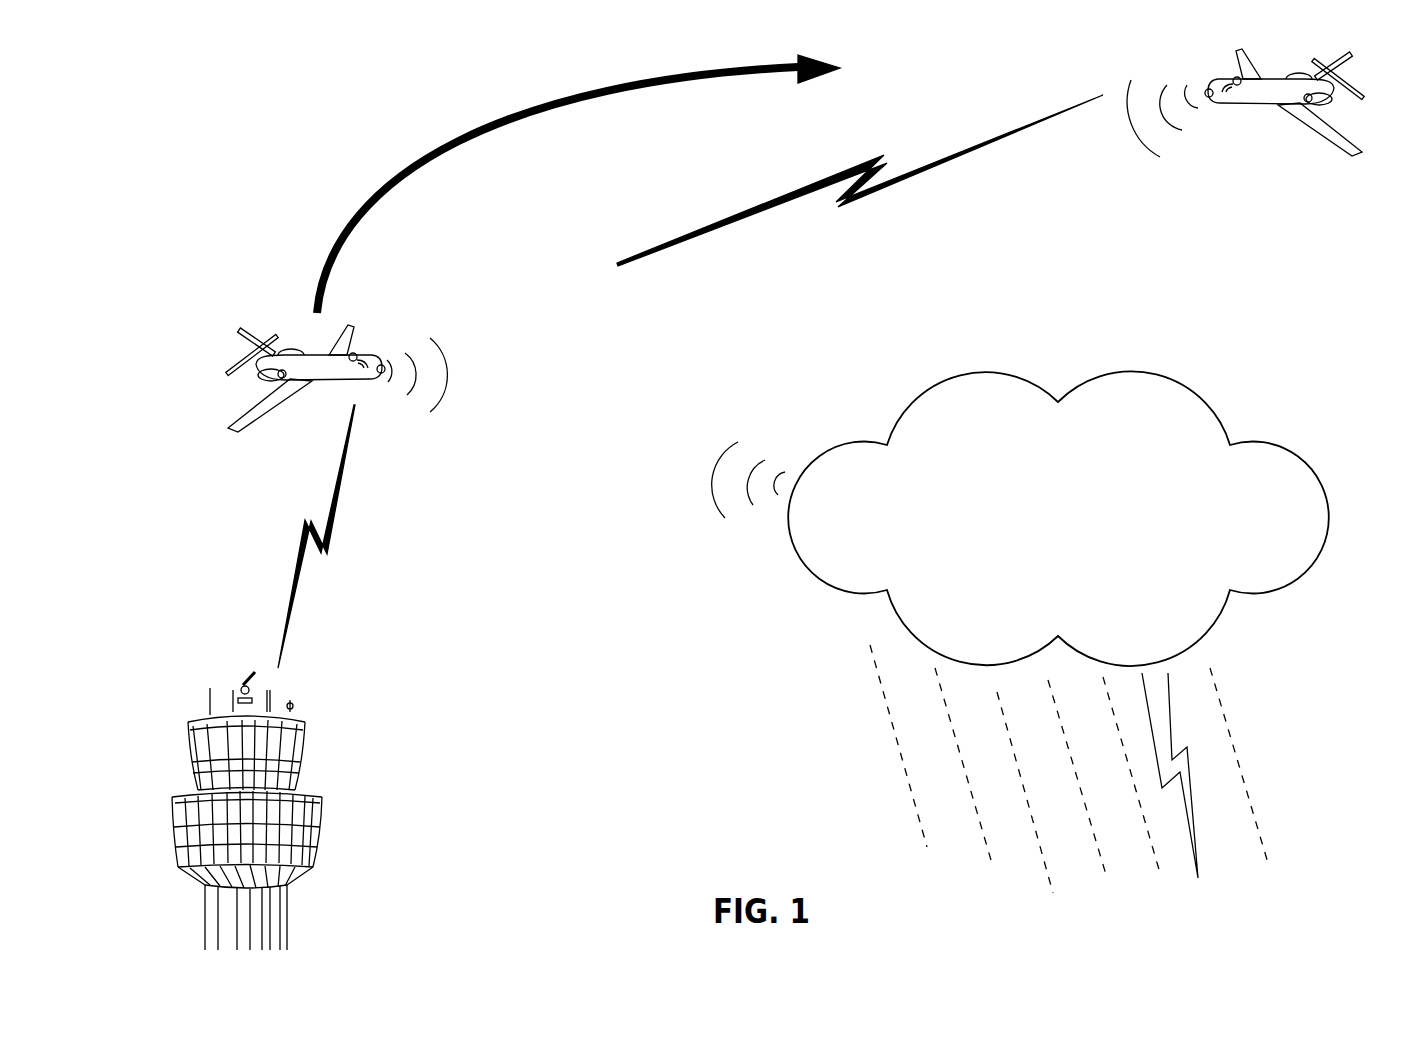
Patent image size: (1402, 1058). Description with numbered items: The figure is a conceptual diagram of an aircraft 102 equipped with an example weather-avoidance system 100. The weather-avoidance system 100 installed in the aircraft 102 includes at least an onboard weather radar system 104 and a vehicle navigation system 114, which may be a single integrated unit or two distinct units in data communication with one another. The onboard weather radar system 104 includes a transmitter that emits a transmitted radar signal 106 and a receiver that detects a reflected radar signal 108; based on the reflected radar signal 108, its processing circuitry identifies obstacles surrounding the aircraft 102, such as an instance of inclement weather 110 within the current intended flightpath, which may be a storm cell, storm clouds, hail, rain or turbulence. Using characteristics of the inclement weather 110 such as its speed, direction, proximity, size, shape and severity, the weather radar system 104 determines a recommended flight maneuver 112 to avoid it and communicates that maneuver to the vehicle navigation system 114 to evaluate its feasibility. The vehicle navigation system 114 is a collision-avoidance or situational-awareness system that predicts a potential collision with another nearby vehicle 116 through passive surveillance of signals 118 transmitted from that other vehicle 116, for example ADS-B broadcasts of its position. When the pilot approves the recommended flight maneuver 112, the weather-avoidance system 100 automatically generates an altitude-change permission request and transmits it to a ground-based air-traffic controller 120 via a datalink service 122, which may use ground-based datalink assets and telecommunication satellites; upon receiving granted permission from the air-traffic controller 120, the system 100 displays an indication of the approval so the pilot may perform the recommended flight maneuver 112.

The weather-avoidance system 100 is at (347, 308).
The aircraft 102 is at (242, 322).
The onboard weather radar system 104 is at (383, 374).
The transmitted radar signal 106 is at (447, 372).
The reflected radar signal 108 is at (752, 518).
The inclement weather 110 is at (1078, 529).
The recommended flight maneuver 112 is at (430, 155).
The vehicle navigation system 114 is at (354, 353).
The other vehicle 116 is at (1275, 137).
The signals transmitted from the other vehicle 118 is at (1153, 157).
The ground-based air-traffic controller 120 is at (322, 780).
The datalink service 122 is at (300, 590).